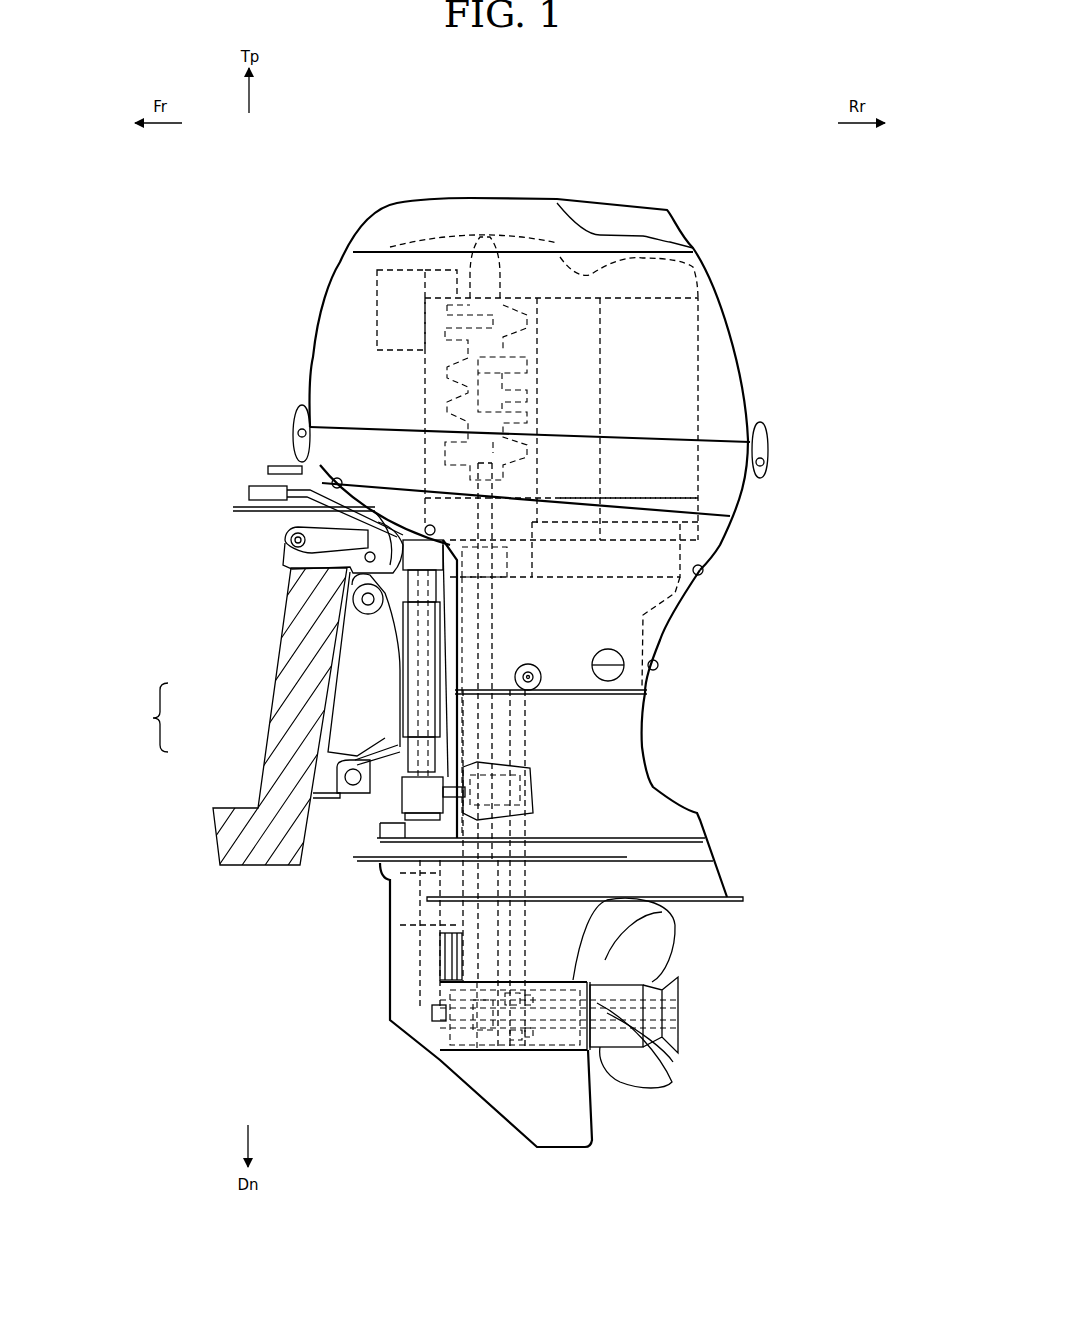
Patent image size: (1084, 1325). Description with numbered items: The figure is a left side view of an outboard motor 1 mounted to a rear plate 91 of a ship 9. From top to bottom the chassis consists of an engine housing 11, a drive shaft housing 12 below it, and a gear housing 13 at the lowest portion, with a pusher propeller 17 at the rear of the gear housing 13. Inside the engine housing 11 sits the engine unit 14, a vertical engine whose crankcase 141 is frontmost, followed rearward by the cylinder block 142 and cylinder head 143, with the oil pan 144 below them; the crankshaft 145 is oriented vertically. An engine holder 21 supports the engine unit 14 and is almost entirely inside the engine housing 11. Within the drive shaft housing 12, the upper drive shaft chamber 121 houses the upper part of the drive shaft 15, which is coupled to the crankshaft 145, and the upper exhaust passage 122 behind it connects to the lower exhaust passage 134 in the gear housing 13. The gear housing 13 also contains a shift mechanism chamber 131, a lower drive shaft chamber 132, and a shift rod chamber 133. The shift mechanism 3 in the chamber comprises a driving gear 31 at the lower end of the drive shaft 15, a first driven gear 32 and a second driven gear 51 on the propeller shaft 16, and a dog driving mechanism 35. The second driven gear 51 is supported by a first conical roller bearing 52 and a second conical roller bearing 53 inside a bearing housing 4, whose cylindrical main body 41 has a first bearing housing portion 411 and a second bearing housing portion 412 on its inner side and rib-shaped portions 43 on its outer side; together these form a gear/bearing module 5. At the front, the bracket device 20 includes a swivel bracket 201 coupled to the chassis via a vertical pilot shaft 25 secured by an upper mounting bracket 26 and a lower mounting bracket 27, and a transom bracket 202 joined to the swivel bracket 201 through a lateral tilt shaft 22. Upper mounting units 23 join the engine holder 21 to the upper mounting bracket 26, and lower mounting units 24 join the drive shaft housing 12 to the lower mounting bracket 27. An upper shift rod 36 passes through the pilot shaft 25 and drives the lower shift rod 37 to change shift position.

The outboard motor 1 is at (693, 220).
The shift mechanism 3 is at (428, 1063).
The bearing housing 4 is at (559, 1016).
The gear/bearing module 5 is at (547, 1050).
The ship 9 is at (255, 872).
The engine housing 11 is at (745, 370).
The drive shaft housing 12 is at (642, 750).
The gear housing 13 is at (415, 1157).
The engine unit 14 is at (703, 355).
The drive shaft 15 is at (560, 703).
The propeller shaft 16 is at (607, 1067).
The pusher propeller 17 is at (670, 953).
The bracket device 20 is at (147, 717).
The engine holder 21 is at (698, 500).
The tilt shaft 22 is at (290, 540).
The upper mounting units 23 is at (503, 550).
The lower mounting units 24 is at (515, 790).
The pilot shaft 25 is at (403, 780).
The upper mounting bracket 26 is at (348, 572).
The lower mounting bracket 27 is at (395, 880).
The driving gear 31 is at (443, 993).
The first driven gear 32 is at (447, 1070).
The dog driving mechanism 35 is at (420, 1020).
The upper shift rod 36 is at (403, 773).
The lower shift rod 37 is at (423, 963).
The main body 41 is at (567, 1053).
The rib-shaped portions 43 is at (683, 1010).
The second driven gear 51 is at (497, 1050).
The first conical roller bearing 52 is at (545, 1060).
The second conical roller bearing 53 is at (575, 1060).
The rear plate 91 is at (290, 648).
The upper drive shaft chamber 121 is at (583, 717).
The upper exhaust passage 122 is at (590, 793).
The shift mechanism chamber 131 is at (487, 1050).
The lower drive shaft chamber 132 is at (440, 927).
The shift rod chamber 133 is at (420, 917).
The lower exhaust passage 134 is at (600, 892).
The crankcase 141 is at (437, 313).
The cylinder block 142 is at (577, 327).
The cylinder head 143 is at (652, 313).
The oil pan 144 is at (685, 597).
The crankshaft 145 is at (477, 387).
The swivel bracket 201 is at (363, 687).
The transom bracket 202 is at (397, 700).
The first bearing housing portion 411 is at (556, 1228).
The second bearing housing portion 412 is at (651, 1240).